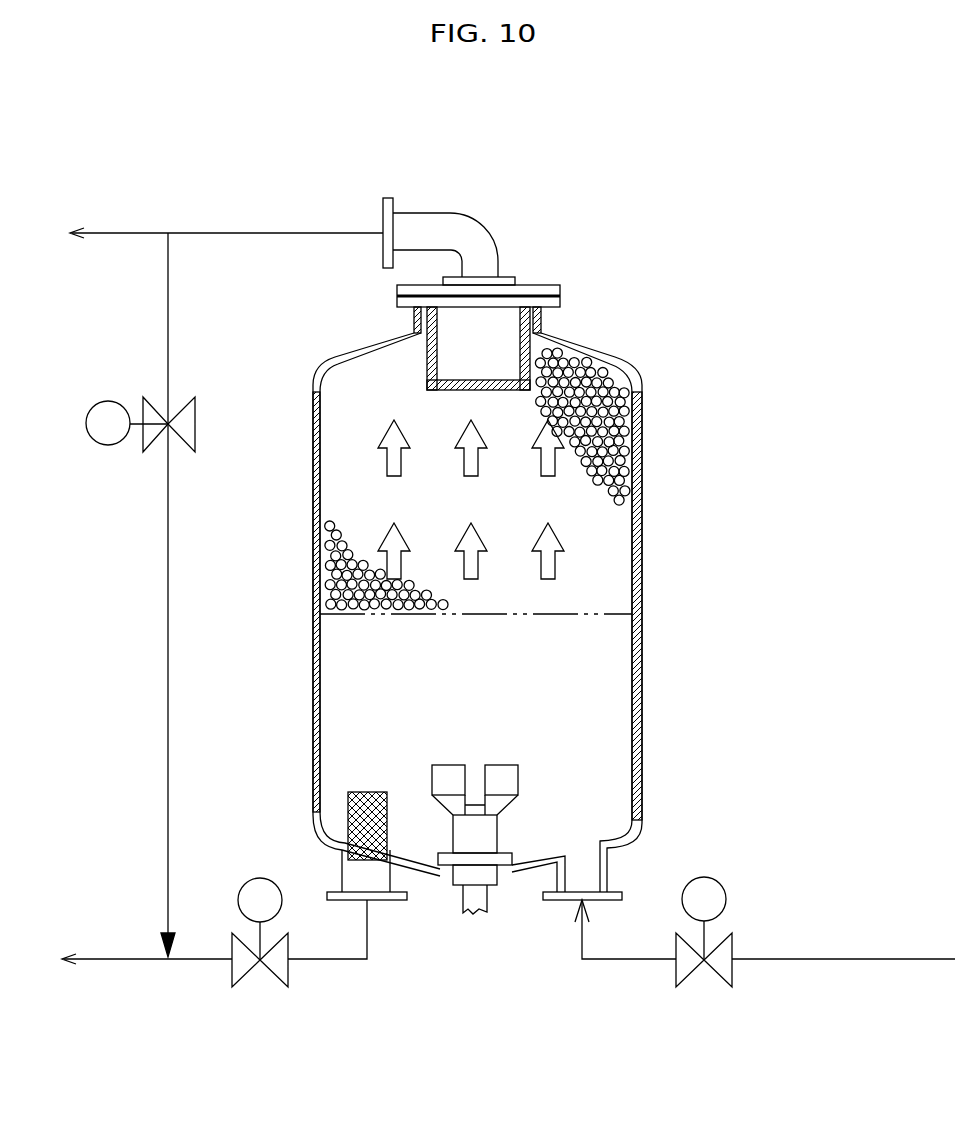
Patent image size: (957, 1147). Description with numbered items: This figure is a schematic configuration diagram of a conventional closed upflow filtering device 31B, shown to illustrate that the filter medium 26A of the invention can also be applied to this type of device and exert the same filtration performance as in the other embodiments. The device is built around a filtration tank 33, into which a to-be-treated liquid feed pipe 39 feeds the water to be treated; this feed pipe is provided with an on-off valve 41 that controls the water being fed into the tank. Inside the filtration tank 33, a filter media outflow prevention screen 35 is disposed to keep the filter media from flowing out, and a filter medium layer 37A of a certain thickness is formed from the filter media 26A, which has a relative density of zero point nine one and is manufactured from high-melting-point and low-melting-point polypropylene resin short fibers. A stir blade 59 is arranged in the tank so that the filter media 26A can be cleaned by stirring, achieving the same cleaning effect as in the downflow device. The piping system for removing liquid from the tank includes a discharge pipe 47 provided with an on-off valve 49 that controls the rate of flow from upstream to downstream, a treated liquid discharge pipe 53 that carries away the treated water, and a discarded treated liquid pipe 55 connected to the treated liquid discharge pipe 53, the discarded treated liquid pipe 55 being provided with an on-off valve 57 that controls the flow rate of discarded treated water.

The closed upflow filtering device 31B is at (649, 293).
The filtration tank 33 is at (640, 678).
The filter media outflow prevention screen 35 is at (427, 362).
The filter medium layer 37A is at (642, 395).
The filter medium 26A is at (608, 560).
The stir blade 59 is at (509, 777).
The treated liquid discharge pipe 53 is at (190, 233).
The discarded treated liquid pipe 55 is at (167, 712).
The on-off valve 57 is at (158, 455).
The discharge pipe 47 is at (127, 960).
The on-off valve 49 is at (257, 970).
The to-be-treated liquid feed pipe 39 is at (795, 959).
The on-off valve 41 is at (702, 972).